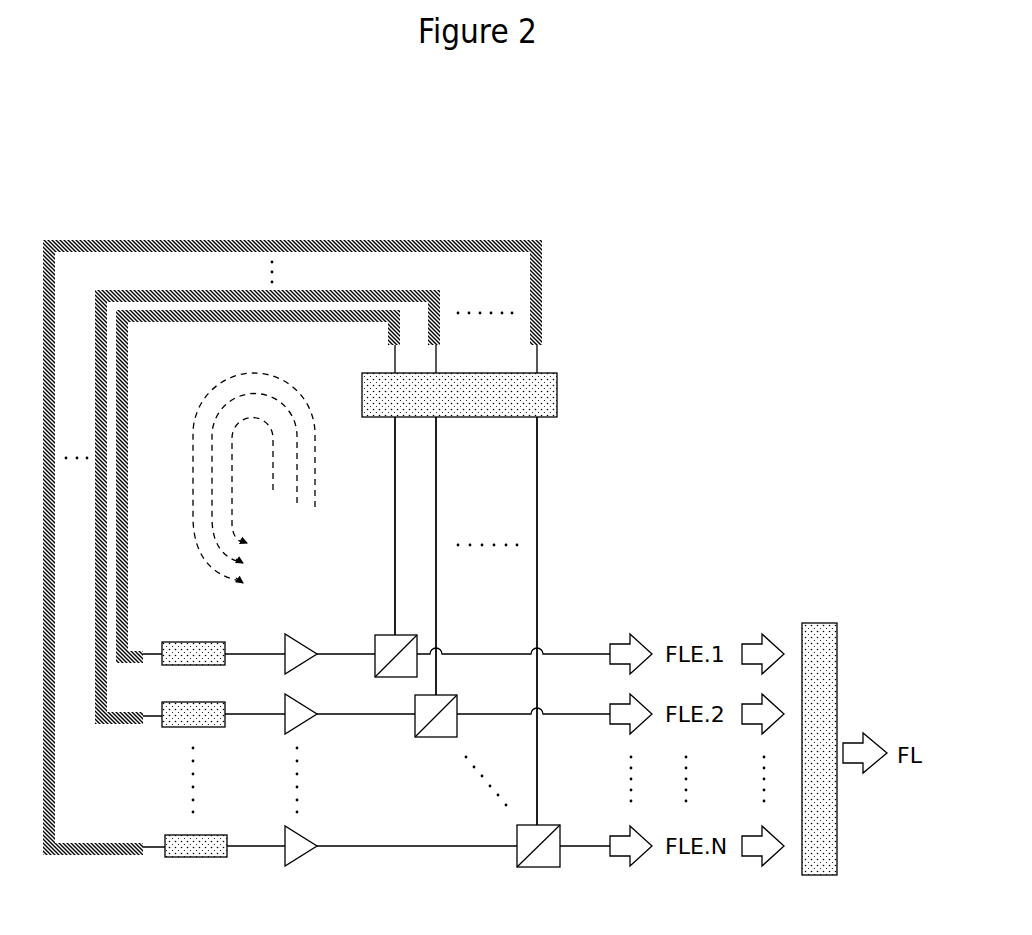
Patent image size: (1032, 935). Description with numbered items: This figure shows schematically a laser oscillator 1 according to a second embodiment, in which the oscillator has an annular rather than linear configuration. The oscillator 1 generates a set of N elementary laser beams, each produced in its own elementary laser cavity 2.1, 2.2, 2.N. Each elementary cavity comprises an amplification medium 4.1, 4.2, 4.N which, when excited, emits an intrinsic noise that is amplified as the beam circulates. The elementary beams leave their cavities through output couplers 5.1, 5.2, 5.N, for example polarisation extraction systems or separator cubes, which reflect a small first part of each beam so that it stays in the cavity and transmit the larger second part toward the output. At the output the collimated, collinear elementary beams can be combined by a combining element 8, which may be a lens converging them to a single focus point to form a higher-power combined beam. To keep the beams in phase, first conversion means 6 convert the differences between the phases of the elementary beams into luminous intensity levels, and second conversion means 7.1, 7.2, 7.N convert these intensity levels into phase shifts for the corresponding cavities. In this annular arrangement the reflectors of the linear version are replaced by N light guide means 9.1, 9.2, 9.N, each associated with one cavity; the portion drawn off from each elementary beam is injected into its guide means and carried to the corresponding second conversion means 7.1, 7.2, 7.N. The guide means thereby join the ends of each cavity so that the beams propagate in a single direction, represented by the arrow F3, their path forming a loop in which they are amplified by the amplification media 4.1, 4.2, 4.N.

The laser oscillator 1 is at (734, 258).
The first elementary laser cavity 2.1 is at (391, 595).
The second elementary laser cavity 2.2 is at (440, 484).
The Nth elementary laser cavity 2.N is at (541, 484).
The first amplification medium 4.1 is at (301, 665).
The second amplification medium 4.2 is at (301, 725).
The Nth amplification medium 4.N is at (301, 857).
The first output coupler 5.1 is at (380, 642).
The second output coupler 5.2 is at (460, 702).
The Nth output coupler 5.N is at (548, 856).
The first conversion means 6 is at (549, 397).
The first second-conversion means 7.1 is at (201, 655).
The second second-conversion means 7.2 is at (211, 722).
The Nth second-conversion means 7.N is at (211, 853).
The combining element 8 is at (825, 635).
The first light guide means 9.1 is at (292, 323).
The second light guide means 9.2 is at (330, 291).
The Nth light guide means 9.N is at (339, 240).
The arrow indicating propagation direction F3 is at (218, 385).